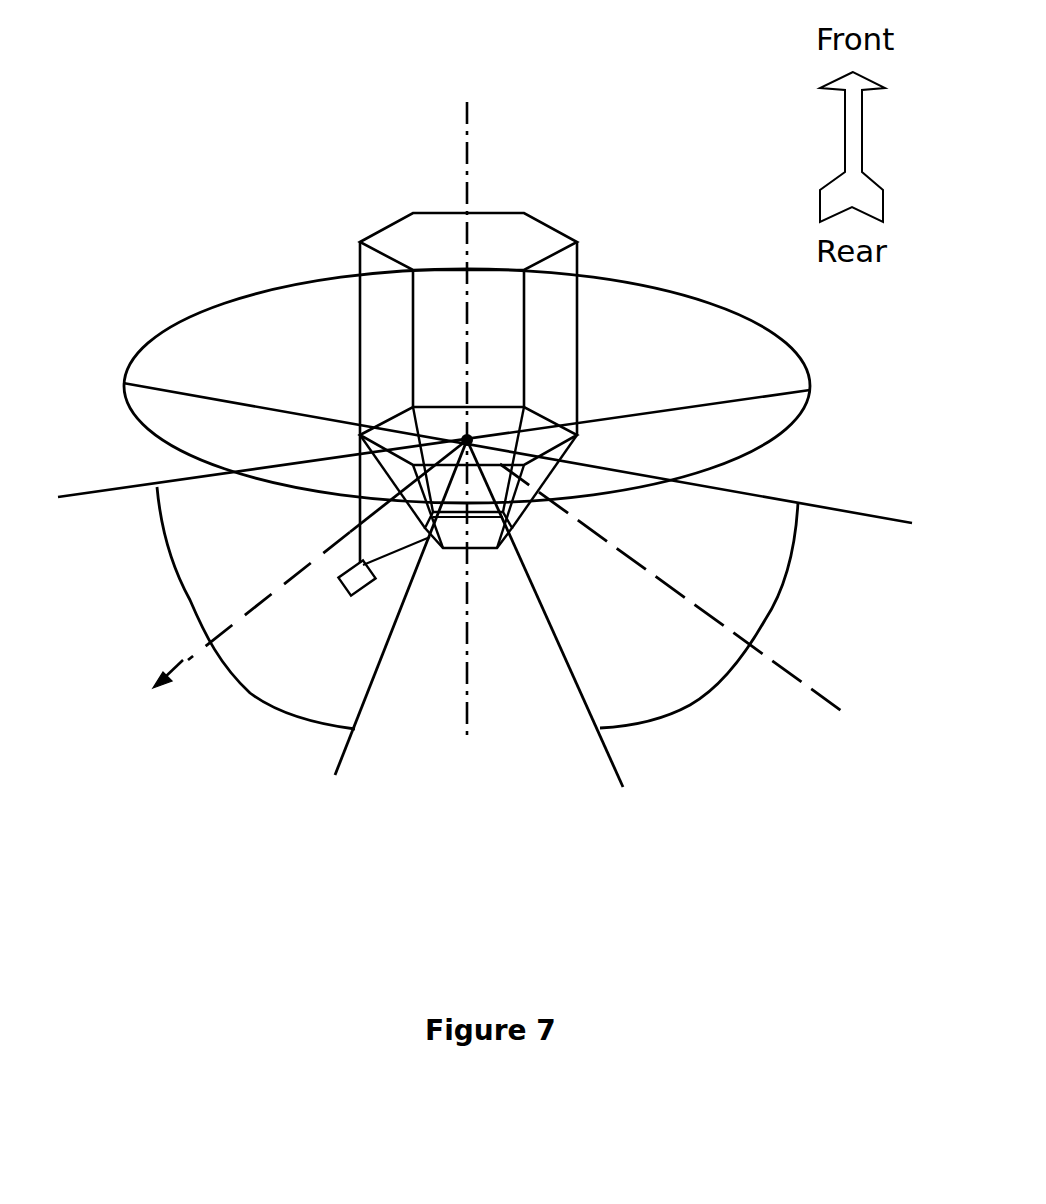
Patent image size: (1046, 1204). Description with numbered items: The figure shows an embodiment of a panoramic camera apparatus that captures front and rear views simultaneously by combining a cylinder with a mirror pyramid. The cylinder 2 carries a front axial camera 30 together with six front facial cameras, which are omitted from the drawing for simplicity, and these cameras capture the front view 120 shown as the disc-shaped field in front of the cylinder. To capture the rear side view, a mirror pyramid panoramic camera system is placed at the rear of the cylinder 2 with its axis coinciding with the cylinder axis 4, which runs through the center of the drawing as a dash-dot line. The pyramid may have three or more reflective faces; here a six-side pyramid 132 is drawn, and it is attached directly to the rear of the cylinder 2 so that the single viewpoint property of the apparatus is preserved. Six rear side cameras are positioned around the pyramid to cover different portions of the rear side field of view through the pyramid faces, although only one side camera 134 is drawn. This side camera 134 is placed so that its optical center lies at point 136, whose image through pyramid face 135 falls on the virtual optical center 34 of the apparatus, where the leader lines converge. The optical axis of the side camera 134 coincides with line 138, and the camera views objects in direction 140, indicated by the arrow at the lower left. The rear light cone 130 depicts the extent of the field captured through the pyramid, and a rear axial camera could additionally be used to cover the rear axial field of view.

The cylinder 2 is at (428, 233).
The cylinder axis 4 is at (477, 119).
The front axial camera 30 is at (465, 437).
The virtual optical center 34 is at (469, 437).
The front view 120 is at (188, 313).
The light cone 130 is at (488, 546).
The six-side pyramid 132 is at (545, 475).
The side camera 134 is at (345, 598).
The pyramid face 135 is at (417, 515).
The optical center point 136 is at (383, 532).
The optical axis line 138 is at (383, 532).
The viewing direction 140 is at (183, 658).